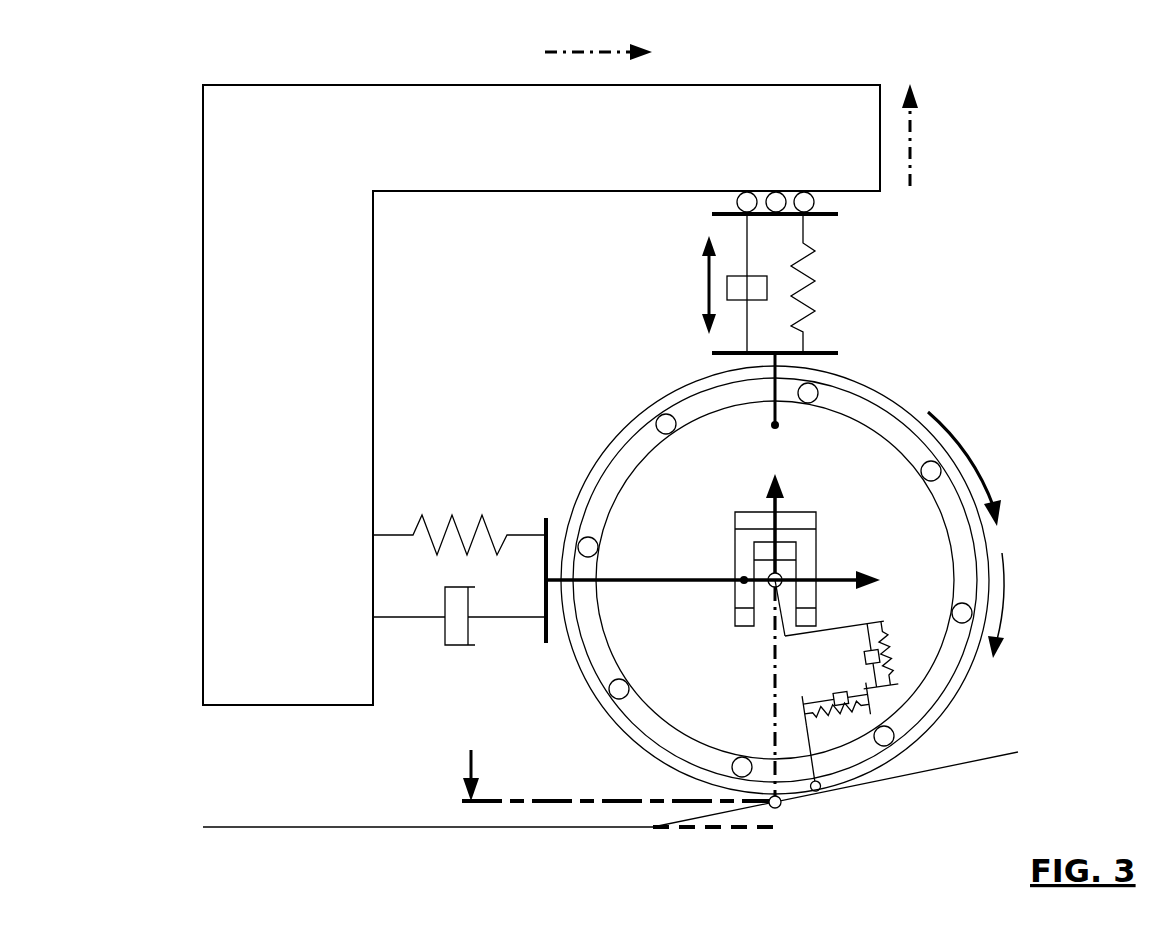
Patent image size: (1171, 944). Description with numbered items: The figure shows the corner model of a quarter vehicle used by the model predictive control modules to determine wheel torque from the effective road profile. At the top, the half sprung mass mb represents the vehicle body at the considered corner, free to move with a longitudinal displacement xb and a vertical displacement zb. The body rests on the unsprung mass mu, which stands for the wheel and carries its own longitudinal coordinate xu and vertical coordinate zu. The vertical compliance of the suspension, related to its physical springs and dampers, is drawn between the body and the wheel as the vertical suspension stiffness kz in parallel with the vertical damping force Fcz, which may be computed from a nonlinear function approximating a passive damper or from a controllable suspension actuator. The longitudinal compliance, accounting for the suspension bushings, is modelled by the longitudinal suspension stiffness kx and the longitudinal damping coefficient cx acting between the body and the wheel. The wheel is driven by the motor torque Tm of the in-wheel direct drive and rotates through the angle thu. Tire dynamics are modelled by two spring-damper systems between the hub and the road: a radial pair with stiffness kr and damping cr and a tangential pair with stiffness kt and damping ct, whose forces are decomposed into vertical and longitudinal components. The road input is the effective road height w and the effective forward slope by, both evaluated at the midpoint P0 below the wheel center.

The half sprung mass mb is at (541, 375).
The longitudinal displacement of the vehicle body xb is at (598, 34).
The vertical displacement of the vehicle body zb is at (925, 135).
The vertical damping force Fcz is at (709, 283).
The vertical suspension stiffness kz is at (821, 283).
The unsprung mass mu is at (775, 580).
The longitudinal displacement of the unsprung mass xu is at (726, 592).
The vertical displacement of the unsprung mass zu is at (759, 516).
The longitudinal suspension stiffness kx is at (459, 512).
The longitudinal suspension damping coefficient cx is at (459, 643).
The radial stiffness of the tire kr is at (855, 657).
The radial damping coefficient of the tire cr is at (856, 658).
The tangential damping coefficient of the tire ct is at (834, 691).
The tangential stiffness of the tire kt is at (839, 745).
The motor torque Tm is at (964, 469).
The wheel rotation angle thu is at (1014, 605).
The effective road height at the wheel center w is at (601, 784).
The effective forward slope by is at (835, 812).
The midpoint P0 is at (792, 817).